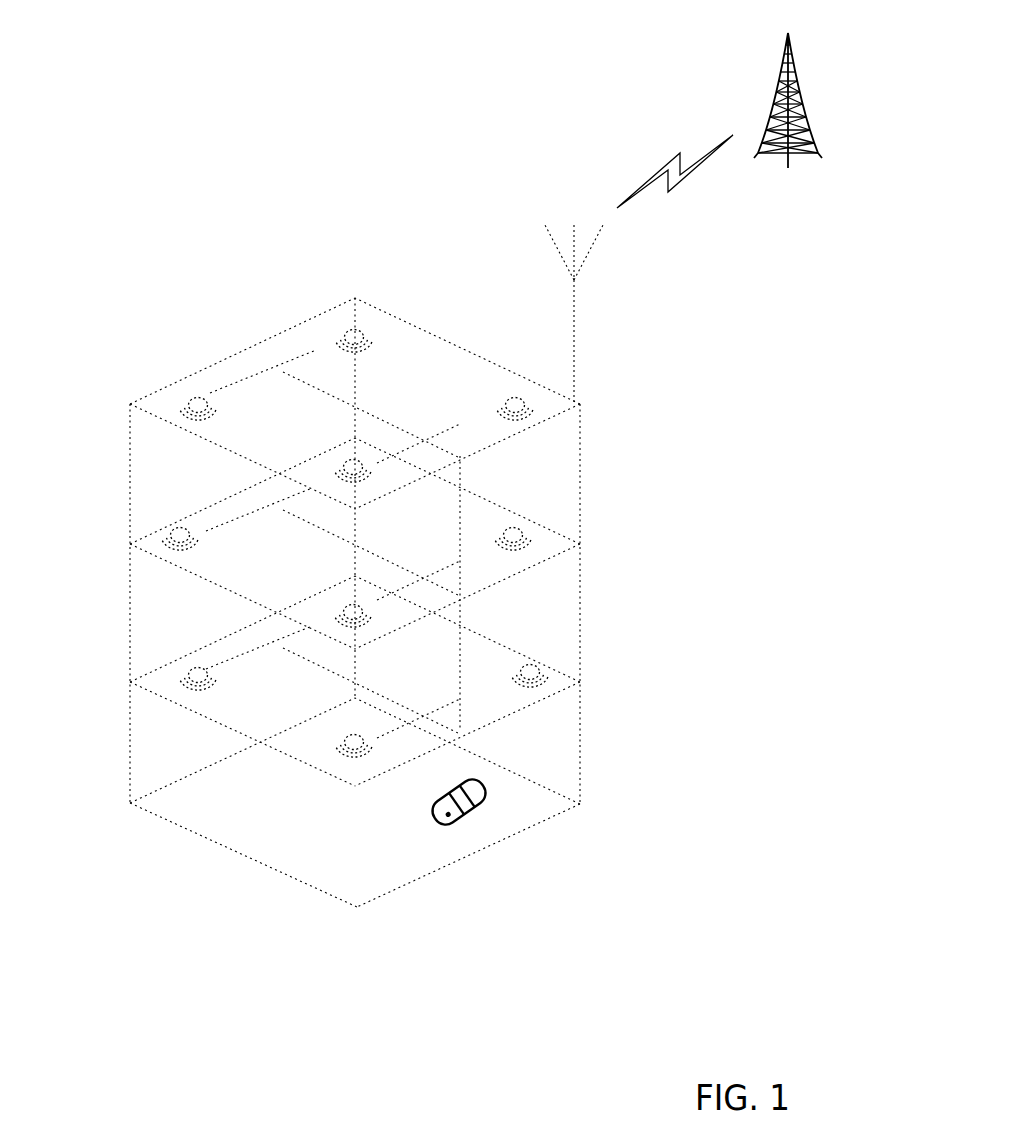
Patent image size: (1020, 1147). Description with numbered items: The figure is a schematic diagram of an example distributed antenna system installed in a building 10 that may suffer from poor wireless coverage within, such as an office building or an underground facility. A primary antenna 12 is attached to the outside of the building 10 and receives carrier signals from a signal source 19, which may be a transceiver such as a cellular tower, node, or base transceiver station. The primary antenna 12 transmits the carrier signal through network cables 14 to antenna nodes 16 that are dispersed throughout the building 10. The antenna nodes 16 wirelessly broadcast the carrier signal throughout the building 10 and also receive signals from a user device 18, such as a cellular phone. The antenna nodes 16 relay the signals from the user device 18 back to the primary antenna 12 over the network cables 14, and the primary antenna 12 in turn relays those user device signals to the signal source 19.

The building 10 is at (128, 430).
The primary antenna 12 is at (576, 368).
The network cables 14 is at (542, 440).
The antenna nodes 16 is at (528, 550).
The user device 18 is at (475, 825).
The signal source 19 is at (777, 75).